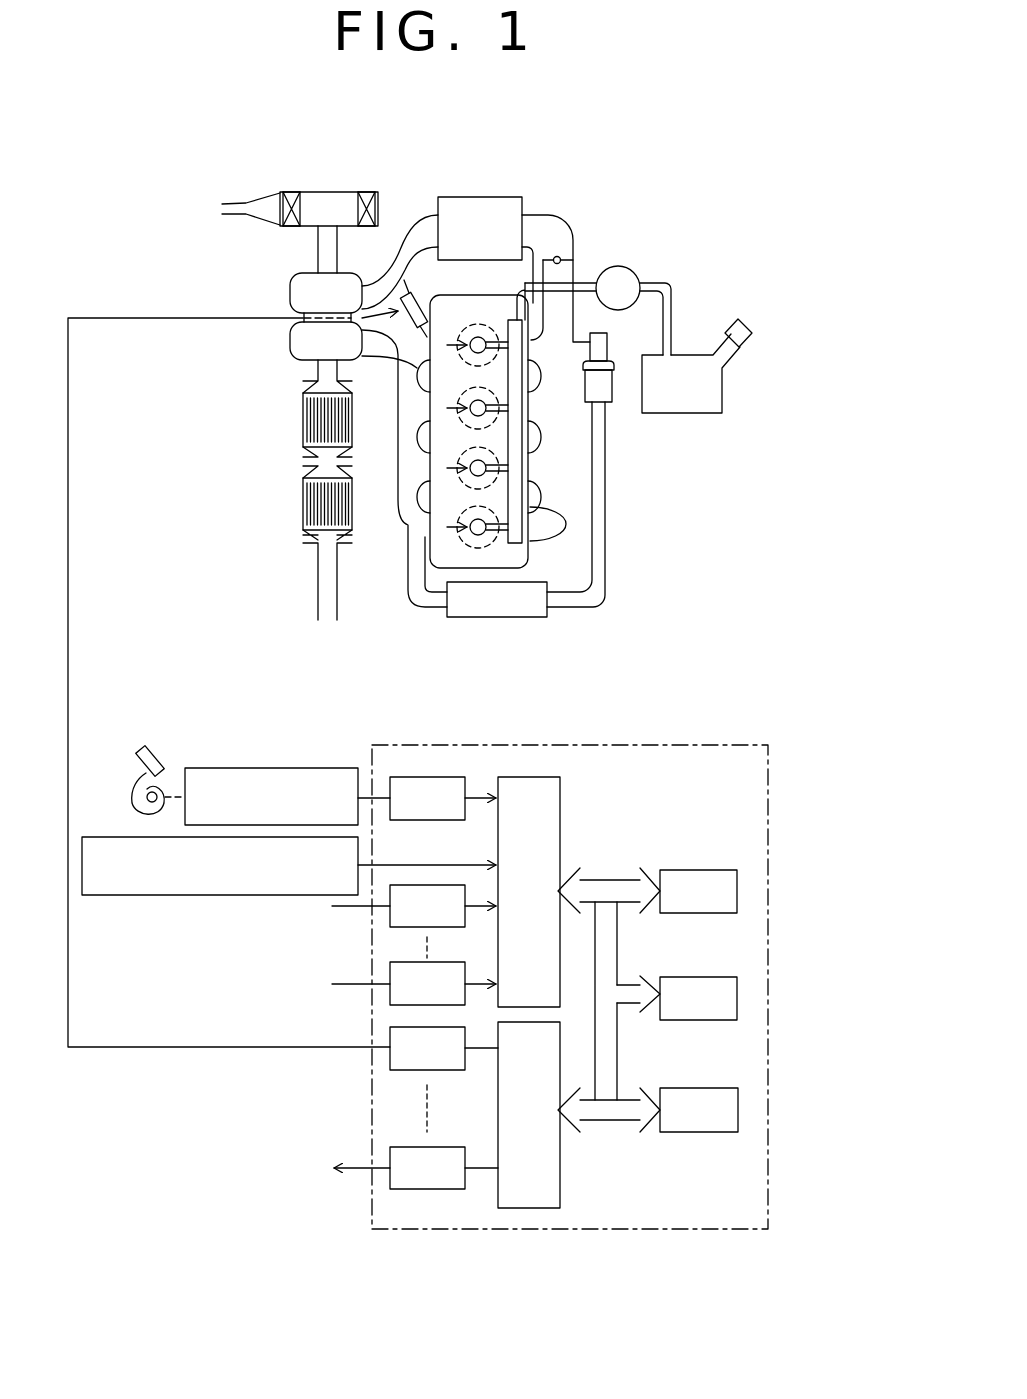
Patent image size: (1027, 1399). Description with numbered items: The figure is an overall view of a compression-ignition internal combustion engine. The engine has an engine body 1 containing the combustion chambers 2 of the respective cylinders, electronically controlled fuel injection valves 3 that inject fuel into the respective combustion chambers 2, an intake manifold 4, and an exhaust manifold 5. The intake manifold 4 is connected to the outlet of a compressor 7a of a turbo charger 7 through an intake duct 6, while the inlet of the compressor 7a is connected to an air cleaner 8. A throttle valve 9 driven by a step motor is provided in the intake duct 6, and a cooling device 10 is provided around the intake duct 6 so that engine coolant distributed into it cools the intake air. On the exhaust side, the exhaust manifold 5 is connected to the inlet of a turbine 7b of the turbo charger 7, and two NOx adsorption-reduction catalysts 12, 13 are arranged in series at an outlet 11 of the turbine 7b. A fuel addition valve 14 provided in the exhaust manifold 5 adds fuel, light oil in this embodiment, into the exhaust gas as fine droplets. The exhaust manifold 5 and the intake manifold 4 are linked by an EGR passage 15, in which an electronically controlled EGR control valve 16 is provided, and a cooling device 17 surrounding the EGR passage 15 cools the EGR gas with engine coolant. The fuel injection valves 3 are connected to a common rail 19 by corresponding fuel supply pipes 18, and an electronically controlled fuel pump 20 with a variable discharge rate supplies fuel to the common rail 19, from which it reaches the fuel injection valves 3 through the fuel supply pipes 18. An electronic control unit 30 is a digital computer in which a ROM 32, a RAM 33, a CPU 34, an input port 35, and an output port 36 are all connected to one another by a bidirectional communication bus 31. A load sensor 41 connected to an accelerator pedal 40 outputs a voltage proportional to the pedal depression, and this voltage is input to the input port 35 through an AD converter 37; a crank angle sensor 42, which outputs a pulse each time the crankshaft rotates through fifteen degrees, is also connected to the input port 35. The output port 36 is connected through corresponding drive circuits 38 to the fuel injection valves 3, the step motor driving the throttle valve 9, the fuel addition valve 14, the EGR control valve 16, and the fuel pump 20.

The engine body 1 is at (544, 573).
The combustion chambers 2 is at (460, 328).
The fuel injection valves 3 is at (476, 336).
The intake manifold 4 is at (556, 509).
The exhaust manifold 5 is at (402, 522).
The intake duct 6 is at (540, 218).
The turbo charger 7 is at (280, 313).
The compressor 7a is at (292, 283).
The turbine 7b is at (292, 335).
The air cleaner 8 is at (324, 196).
The throttle valve 9 is at (572, 260).
The cooling device 10 is at (484, 210).
The outlet of the turbine 11 is at (312, 375).
The NOx adsorption-reduction catalyst 12 is at (348, 415).
The NOx adsorption-reduction catalyst 13 is at (348, 498).
The fuel addition valve 14 is at (413, 283).
The EGR passage 15 is at (612, 562).
The EGR control valve 16 is at (604, 348).
The cooling device 17 is at (512, 608).
The fuel supply pipes 18 is at (498, 322).
The common rail 19 is at (518, 468).
The fuel pump 20 is at (636, 266).
The electronic control unit 30 is at (780, 775).
The bidirectional communication bus 31 is at (610, 888).
The ROM 32 is at (698, 869).
The RAM 33 is at (698, 976).
The CPU 34 is at (698, 1087).
The input port 35 is at (532, 777).
The output port 36 is at (562, 1172).
The AD converter 37 is at (430, 776).
The drive circuits 38 is at (388, 1157).
The accelerator pedal 40 is at (170, 758).
The load sensor 41 is at (283, 766).
The crank angle sensor 42 is at (182, 897).